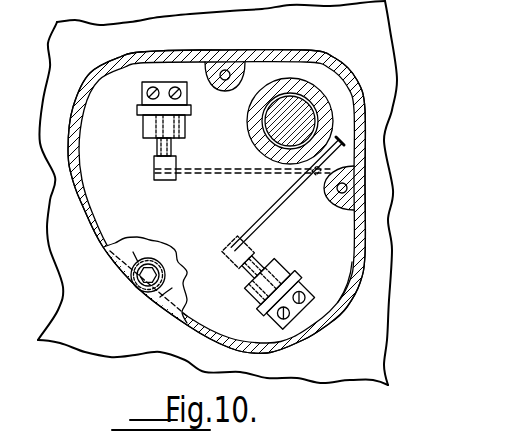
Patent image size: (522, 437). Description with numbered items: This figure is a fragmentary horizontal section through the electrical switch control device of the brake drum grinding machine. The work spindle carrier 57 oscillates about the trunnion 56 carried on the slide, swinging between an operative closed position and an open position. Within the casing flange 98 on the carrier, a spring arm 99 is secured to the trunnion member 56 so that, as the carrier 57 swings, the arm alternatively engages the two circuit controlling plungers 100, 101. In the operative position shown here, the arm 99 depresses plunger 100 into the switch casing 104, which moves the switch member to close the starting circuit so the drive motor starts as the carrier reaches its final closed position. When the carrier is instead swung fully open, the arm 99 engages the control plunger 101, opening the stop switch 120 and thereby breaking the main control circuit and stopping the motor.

The work spindle carrier 57 is at (360, 33).
The casing flange 98 is at (68, 144).
The trunnion 56 is at (302, 120).
The stop switch 120 is at (147, 134).
The control plunger 101 is at (163, 181).
The spring arm 99 is at (272, 208).
The circuit controlling plunger 100 is at (238, 263).
The switch casing 104 is at (336, 280).